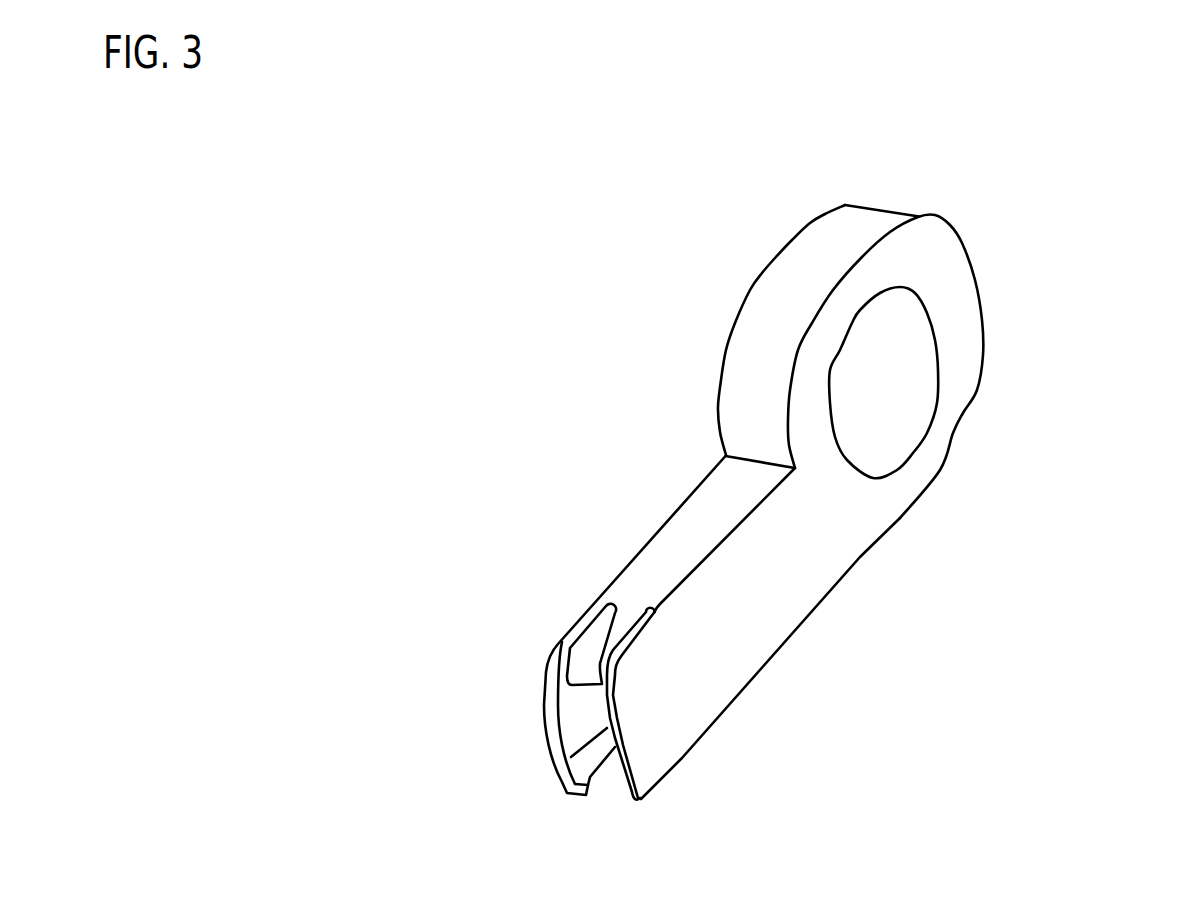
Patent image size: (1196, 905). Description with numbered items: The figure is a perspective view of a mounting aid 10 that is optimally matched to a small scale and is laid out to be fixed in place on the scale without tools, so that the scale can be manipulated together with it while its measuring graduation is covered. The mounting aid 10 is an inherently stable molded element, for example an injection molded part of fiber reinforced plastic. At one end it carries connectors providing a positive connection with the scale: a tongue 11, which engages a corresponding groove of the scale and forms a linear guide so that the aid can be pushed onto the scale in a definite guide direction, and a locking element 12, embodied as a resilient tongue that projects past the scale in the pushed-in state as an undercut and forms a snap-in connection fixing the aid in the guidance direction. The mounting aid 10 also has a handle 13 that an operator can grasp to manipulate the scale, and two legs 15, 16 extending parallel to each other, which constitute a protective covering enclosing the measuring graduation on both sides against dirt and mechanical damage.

The mounting aid 10 is at (1035, 380).
The tongue 11 is at (597, 758).
The locking element 12 is at (590, 667).
The handle 13 is at (937, 276).
The leg 15 is at (616, 743).
The leg 16 is at (562, 742).